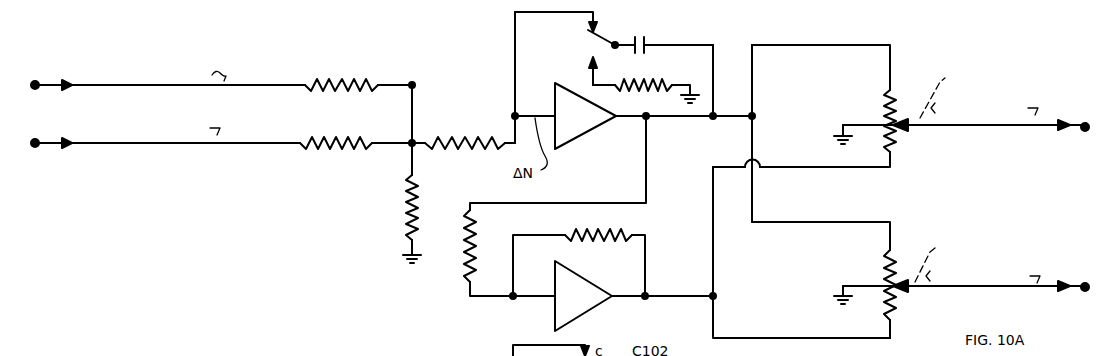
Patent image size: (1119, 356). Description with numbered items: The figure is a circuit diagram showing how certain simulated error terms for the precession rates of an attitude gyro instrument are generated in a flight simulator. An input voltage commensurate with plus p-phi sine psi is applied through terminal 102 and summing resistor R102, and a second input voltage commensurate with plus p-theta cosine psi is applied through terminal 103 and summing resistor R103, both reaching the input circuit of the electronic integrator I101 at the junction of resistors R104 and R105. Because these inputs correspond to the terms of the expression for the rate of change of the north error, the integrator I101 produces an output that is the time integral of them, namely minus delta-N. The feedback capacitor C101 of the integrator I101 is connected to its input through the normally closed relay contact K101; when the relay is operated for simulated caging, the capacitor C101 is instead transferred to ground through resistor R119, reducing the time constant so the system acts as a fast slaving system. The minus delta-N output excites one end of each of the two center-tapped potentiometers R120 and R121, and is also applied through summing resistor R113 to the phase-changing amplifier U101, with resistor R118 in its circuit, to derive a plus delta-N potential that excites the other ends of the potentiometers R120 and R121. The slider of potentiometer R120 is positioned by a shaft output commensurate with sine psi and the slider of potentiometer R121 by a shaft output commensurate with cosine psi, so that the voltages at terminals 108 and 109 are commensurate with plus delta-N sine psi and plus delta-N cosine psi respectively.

The terminal 102 is at (33, 68).
The terminal 103 is at (33, 126).
The terminal 108 is at (1079, 116).
The terminal 109 is at (1086, 258).
The summing resistor R102 is at (377, 93).
The summing resistor R103 is at (368, 151).
The resistor R104 is at (400, 209).
The resistor R105 is at (490, 128).
The electronic integrator I101 is at (576, 144).
The relay contact K101 is at (599, 40).
The feedback capacitor C101 is at (648, 48).
The resistor R119 is at (634, 86).
The summing resistor R113 is at (484, 218).
The resistor R118 is at (571, 212).
The phase-changing amplifier U101 is at (590, 320).
The center-tapped potentiometer R120 is at (902, 136).
The center-tapped potentiometer R121 is at (898, 294).